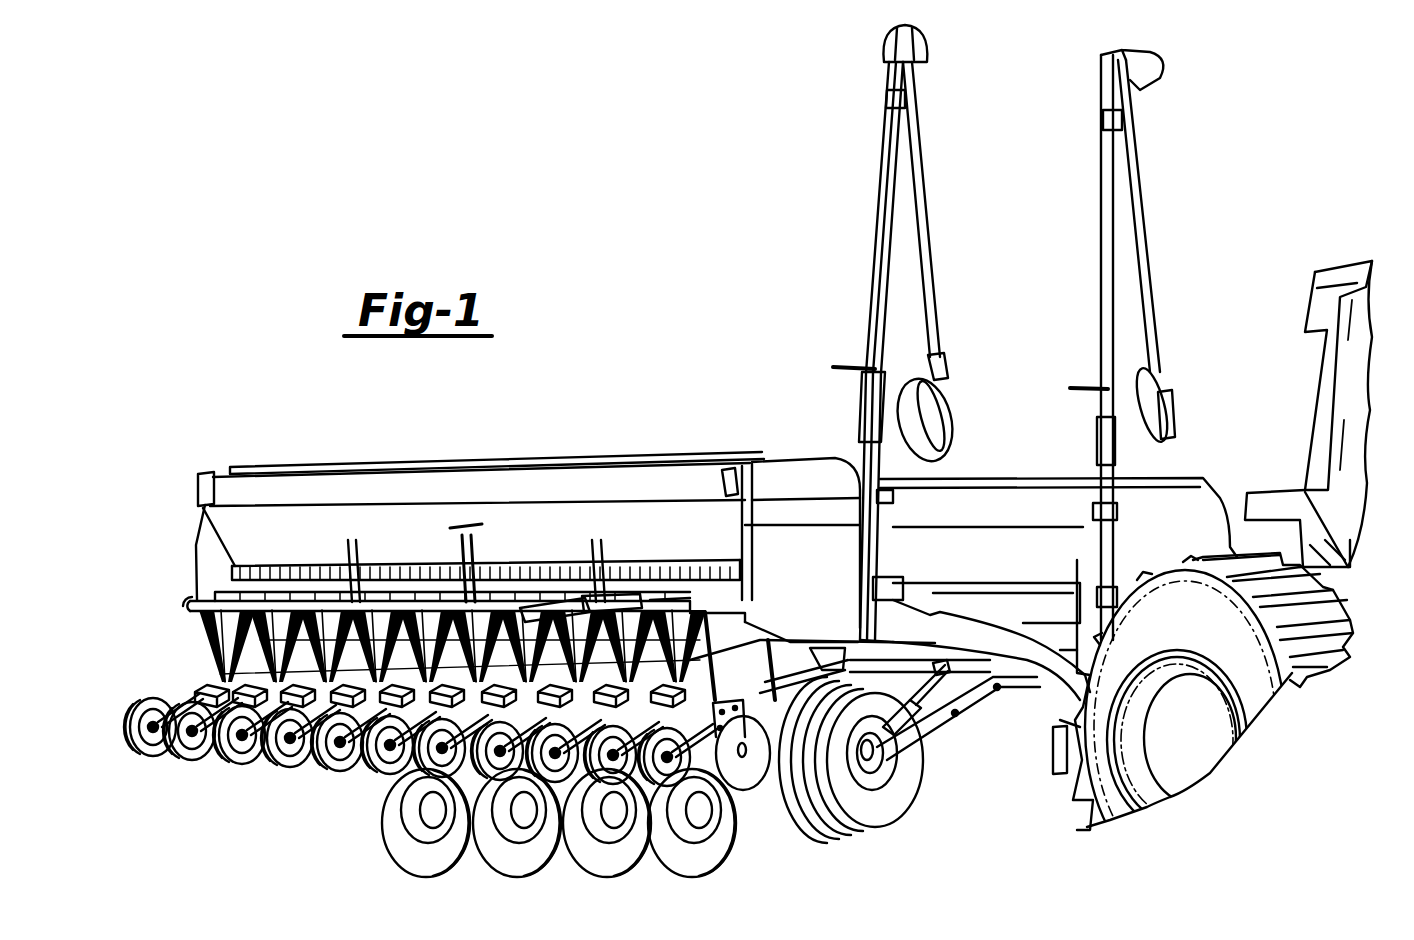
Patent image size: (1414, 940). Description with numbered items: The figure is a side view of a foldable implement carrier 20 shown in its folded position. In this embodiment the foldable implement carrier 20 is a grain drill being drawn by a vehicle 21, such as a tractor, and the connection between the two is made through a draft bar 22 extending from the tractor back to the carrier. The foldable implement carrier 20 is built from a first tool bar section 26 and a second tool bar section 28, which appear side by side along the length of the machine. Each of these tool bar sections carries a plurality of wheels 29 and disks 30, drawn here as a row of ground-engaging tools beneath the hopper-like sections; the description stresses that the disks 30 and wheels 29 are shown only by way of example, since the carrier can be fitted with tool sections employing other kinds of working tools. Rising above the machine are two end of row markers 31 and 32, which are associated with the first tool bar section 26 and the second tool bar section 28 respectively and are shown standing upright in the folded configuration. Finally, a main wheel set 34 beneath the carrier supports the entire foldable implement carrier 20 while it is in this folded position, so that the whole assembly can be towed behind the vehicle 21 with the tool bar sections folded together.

The foldable implement carrier 20 is at (670, 353).
The vehicle 21 is at (1330, 275).
The draft bar 22 is at (1040, 680).
The first tool bar section 26 is at (405, 480).
The second tool bar section 28 is at (1003, 482).
The wheels 29 is at (132, 718).
The disks 30 is at (750, 782).
The end of row marker 31 is at (877, 242).
The end of row marker 32 is at (1100, 240).
The main wheel set 34 is at (390, 828).